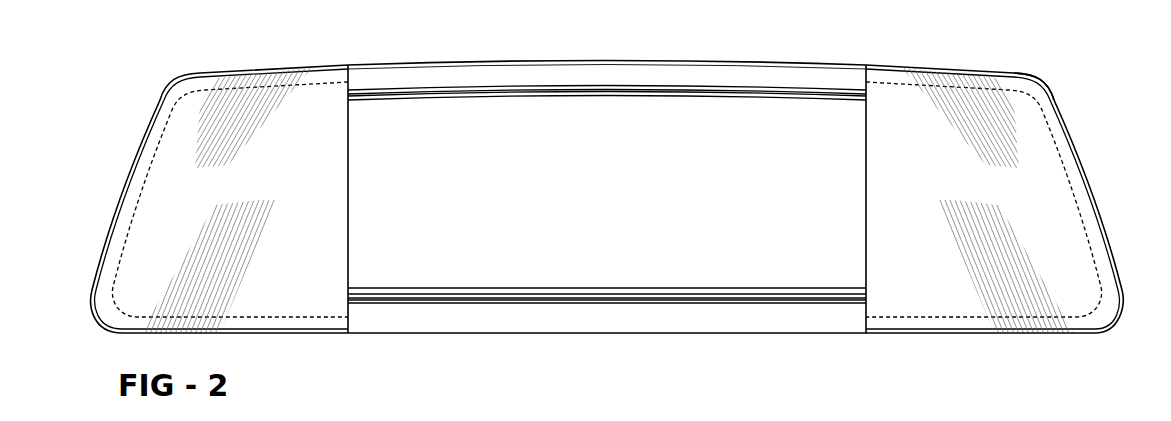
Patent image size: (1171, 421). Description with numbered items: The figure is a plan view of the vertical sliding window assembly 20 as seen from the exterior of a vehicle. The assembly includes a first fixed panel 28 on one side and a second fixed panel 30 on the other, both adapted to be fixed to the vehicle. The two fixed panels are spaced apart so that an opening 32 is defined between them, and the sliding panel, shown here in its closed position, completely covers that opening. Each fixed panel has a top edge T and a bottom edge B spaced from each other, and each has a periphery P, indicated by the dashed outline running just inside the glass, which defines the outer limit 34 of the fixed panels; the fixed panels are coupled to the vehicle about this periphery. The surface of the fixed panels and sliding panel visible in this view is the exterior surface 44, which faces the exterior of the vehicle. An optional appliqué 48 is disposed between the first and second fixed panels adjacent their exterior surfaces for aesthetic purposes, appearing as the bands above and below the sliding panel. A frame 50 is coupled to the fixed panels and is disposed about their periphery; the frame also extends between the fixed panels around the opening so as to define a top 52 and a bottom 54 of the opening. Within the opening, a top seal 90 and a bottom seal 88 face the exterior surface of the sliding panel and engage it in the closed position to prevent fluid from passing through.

The vertical sliding window assembly 20 is at (353, 49).
The first fixed panel 28 is at (176, 138).
The second fixed panel 30 is at (1050, 160).
The opening 32 is at (814, 113).
The outer limit 34 is at (982, 72).
The exterior surface 44 is at (226, 193).
The appliqué 48 is at (767, 82).
The frame 50 is at (1027, 75).
The top 52 is at (507, 110).
The bottom 54 is at (532, 278).
The bottom seal 88 is at (684, 274).
The top seal 90 is at (710, 109).
The top edge T is at (332, 96).
The bottom edge B is at (307, 310).
The periphery P is at (138, 192).